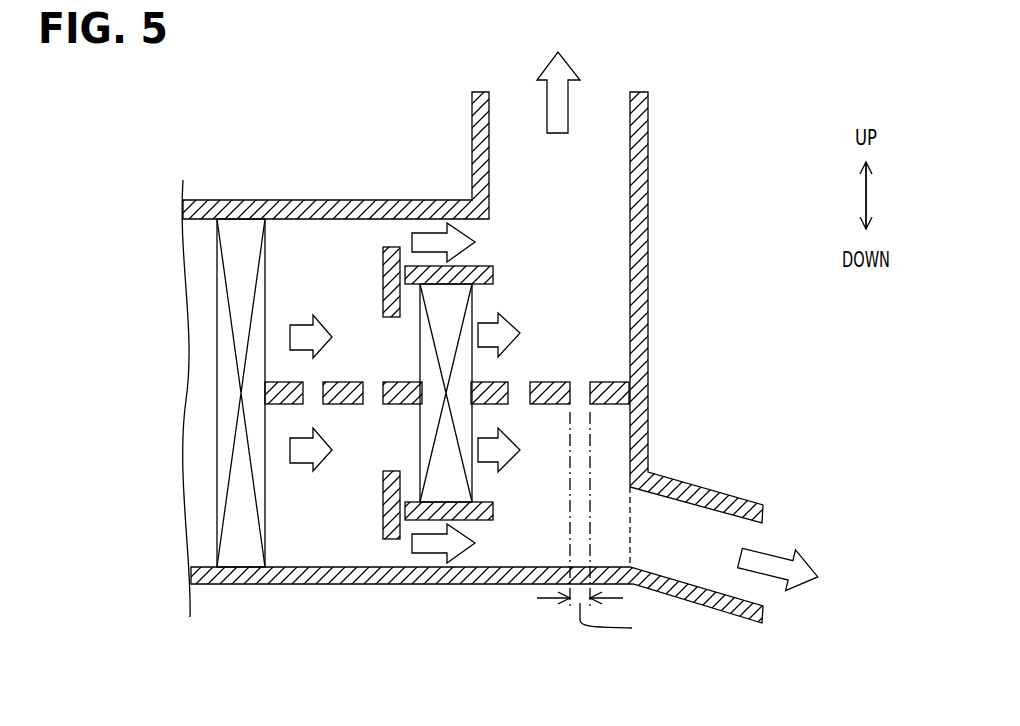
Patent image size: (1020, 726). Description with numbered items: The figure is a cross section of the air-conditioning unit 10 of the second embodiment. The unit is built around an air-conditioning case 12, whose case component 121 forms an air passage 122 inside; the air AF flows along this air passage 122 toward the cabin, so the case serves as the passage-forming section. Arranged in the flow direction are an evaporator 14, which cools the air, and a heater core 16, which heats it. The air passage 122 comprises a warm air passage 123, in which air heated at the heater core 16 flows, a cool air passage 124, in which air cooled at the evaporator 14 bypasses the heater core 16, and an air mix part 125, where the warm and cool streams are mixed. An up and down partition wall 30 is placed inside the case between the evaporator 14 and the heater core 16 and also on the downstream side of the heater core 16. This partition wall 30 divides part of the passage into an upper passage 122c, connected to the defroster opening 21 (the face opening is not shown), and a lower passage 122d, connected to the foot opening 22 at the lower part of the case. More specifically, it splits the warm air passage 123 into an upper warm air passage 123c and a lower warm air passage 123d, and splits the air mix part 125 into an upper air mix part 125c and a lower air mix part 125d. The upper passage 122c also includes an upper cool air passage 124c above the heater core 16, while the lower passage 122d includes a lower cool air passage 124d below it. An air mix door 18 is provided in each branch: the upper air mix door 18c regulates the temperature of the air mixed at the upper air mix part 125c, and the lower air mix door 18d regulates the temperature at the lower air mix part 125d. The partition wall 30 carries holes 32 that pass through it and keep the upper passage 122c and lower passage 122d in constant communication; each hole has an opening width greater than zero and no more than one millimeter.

The air-conditioning unit 10 is at (163, 128).
The air-conditioning case 12 is at (473, 357).
The case component 121 is at (248, 200).
The air passage 122 is at (226, 394).
The upper passage 122c is at (343, 305).
The lower passage 122d is at (342, 472).
The evaporator 14 is at (217, 495).
The heater core 16 is at (420, 434).
The air mix door 18 is at (364, 398).
The upper air mix door 18c is at (382, 263).
The lower air mix door 18d is at (383, 507).
The warm air passage 123 is at (502, 358).
The upper warm air passage 123c is at (482, 305).
The lower warm air passage 123d is at (482, 481).
The cool air passage 124 is at (431, 359).
The upper cool air passage 124c is at (404, 228).
The lower cool air passage 124d is at (428, 558).
The air mix part 125 is at (646, 385).
The upper air mix part 125c is at (588, 333).
The lower air mix part 125d is at (600, 452).
The up and down partition wall 30 is at (610, 380).
The holes 32 is at (580, 392).
The defroster opening 21 is at (597, 108).
The foot opening 22 is at (751, 588).
The air AF is at (302, 462).